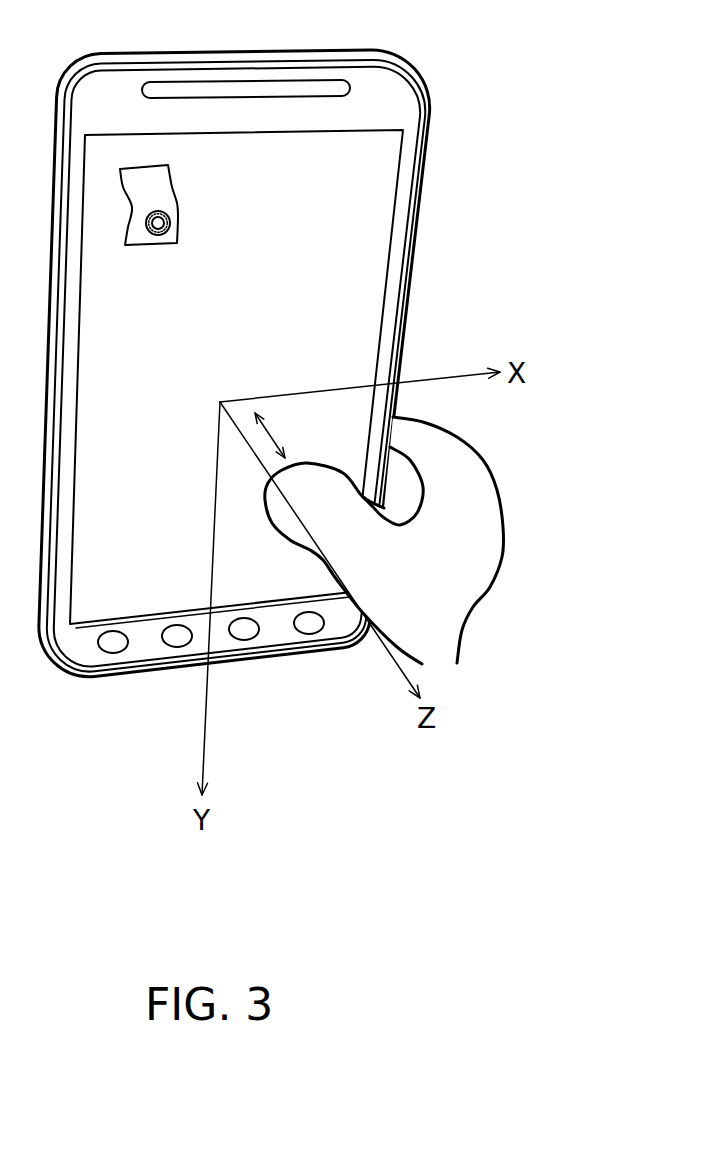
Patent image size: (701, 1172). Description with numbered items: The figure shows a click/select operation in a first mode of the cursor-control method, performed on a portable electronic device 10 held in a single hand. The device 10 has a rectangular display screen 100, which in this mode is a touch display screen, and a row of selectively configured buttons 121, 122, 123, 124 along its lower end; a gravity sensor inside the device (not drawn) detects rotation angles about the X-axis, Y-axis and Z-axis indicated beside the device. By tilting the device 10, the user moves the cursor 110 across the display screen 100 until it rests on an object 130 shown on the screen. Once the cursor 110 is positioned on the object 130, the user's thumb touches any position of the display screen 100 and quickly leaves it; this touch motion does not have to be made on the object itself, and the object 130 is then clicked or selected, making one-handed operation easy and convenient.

The portable electronic device 10 is at (388, 56).
The display screen 100 is at (400, 183).
The cursor 110 is at (170, 223).
The object 130 is at (150, 245).
The selectively configured button 121 is at (309, 634).
The selectively configured button 122 is at (244, 640).
The selectively configured button 123 is at (178, 647).
The selectively configured button 124 is at (118, 653).